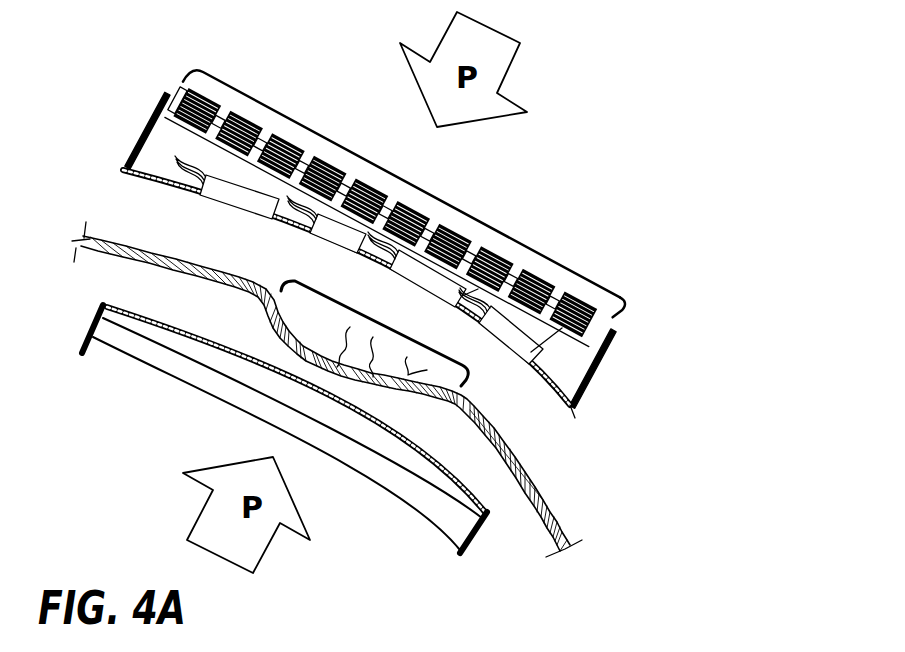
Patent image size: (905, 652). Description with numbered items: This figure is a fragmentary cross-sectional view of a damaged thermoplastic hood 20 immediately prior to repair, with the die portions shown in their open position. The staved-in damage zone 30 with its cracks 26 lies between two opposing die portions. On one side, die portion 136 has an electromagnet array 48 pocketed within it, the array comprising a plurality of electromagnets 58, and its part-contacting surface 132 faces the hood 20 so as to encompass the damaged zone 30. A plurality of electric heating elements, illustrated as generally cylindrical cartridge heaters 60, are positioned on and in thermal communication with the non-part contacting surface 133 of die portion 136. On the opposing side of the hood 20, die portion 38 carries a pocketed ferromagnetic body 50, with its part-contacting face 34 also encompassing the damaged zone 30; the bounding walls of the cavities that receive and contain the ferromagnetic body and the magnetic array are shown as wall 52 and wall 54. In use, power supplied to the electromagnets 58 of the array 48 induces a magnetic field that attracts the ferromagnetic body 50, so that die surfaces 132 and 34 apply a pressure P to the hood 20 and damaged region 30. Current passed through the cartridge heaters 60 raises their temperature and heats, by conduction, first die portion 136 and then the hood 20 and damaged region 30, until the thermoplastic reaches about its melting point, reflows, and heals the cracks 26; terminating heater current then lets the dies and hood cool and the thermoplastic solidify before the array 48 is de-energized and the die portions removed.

The hood 20 is at (572, 500).
The cracks 26 is at (335, 357).
The damage zone 30 is at (402, 308).
The part-contacting face 34 is at (500, 442).
The die portion 38 is at (403, 440).
The electromagnet array 48 is at (440, 200).
The ferromagnetic body 50 is at (188, 382).
The bounding wall of cavity 52 is at (478, 532).
The bounding wall of cavity 54 is at (617, 347).
The electromagnets 58 is at (255, 128).
The cartridge heaters 60 is at (318, 218).
The part-contacting surface 132 is at (553, 400).
The non-part contacting surface 133 is at (617, 317).
The die portion 136 is at (490, 299).